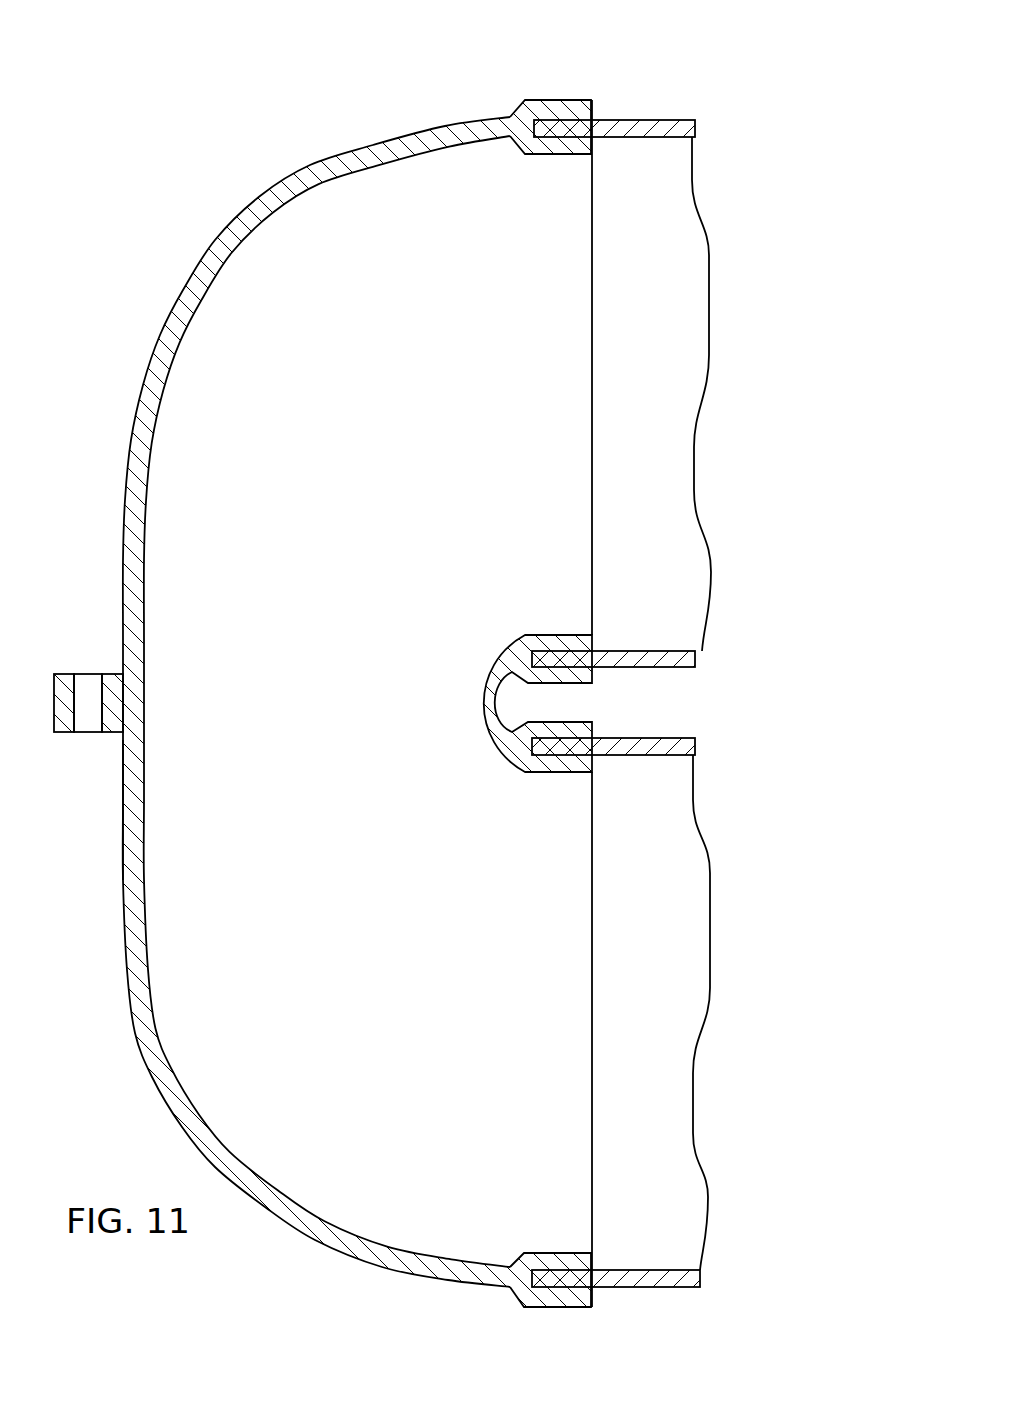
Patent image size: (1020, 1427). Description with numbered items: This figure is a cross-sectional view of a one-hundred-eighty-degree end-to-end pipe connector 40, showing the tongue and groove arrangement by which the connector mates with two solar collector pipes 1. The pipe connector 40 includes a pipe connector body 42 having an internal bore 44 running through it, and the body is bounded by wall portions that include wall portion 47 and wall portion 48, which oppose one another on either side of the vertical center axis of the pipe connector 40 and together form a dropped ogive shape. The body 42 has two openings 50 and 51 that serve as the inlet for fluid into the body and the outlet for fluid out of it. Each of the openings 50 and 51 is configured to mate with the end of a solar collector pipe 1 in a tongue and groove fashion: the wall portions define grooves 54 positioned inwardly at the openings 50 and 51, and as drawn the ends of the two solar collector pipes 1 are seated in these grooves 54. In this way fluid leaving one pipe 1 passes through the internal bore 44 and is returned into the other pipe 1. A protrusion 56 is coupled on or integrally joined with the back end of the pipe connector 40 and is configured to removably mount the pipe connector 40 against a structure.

The solar collector pipe 1 is at (587, 703).
The pipe connector 40 is at (263, 200).
The pipe connector body 42 is at (121, 772).
The internal bore 44 is at (310, 726).
The wall portion 47 is at (518, 110).
The wall portion 48 is at (492, 698).
The opening 50 is at (592, 980).
The opening 51 is at (592, 394).
The groove 54 is at (550, 116).
The protrusion 56 is at (85, 672).